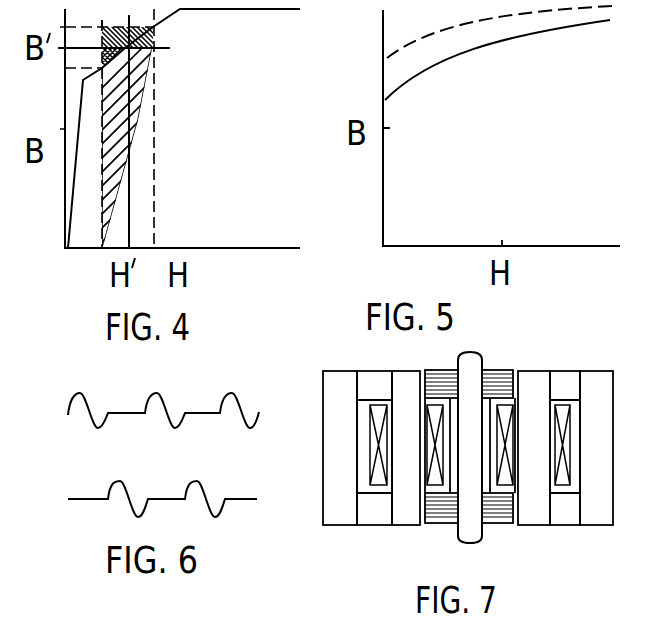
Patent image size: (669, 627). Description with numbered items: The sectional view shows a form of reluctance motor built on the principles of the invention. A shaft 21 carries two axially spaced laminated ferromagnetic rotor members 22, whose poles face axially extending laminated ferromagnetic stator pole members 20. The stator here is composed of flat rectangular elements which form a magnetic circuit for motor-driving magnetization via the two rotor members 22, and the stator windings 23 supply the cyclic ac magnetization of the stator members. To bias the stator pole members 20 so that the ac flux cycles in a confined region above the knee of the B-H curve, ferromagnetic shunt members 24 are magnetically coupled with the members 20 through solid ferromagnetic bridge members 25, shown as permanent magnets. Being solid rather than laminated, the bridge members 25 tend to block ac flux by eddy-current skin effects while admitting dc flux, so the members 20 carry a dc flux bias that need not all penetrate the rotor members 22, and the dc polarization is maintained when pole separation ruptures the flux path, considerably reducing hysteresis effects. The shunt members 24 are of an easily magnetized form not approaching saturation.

The stator pole member 20 is at (532, 382).
The shaft 21 is at (478, 477).
The rotor member 22 is at (447, 507).
The winding 23 is at (502, 467).
The ferromagnetic shunt member 24 is at (598, 395).
The bridge member 25 is at (553, 507).